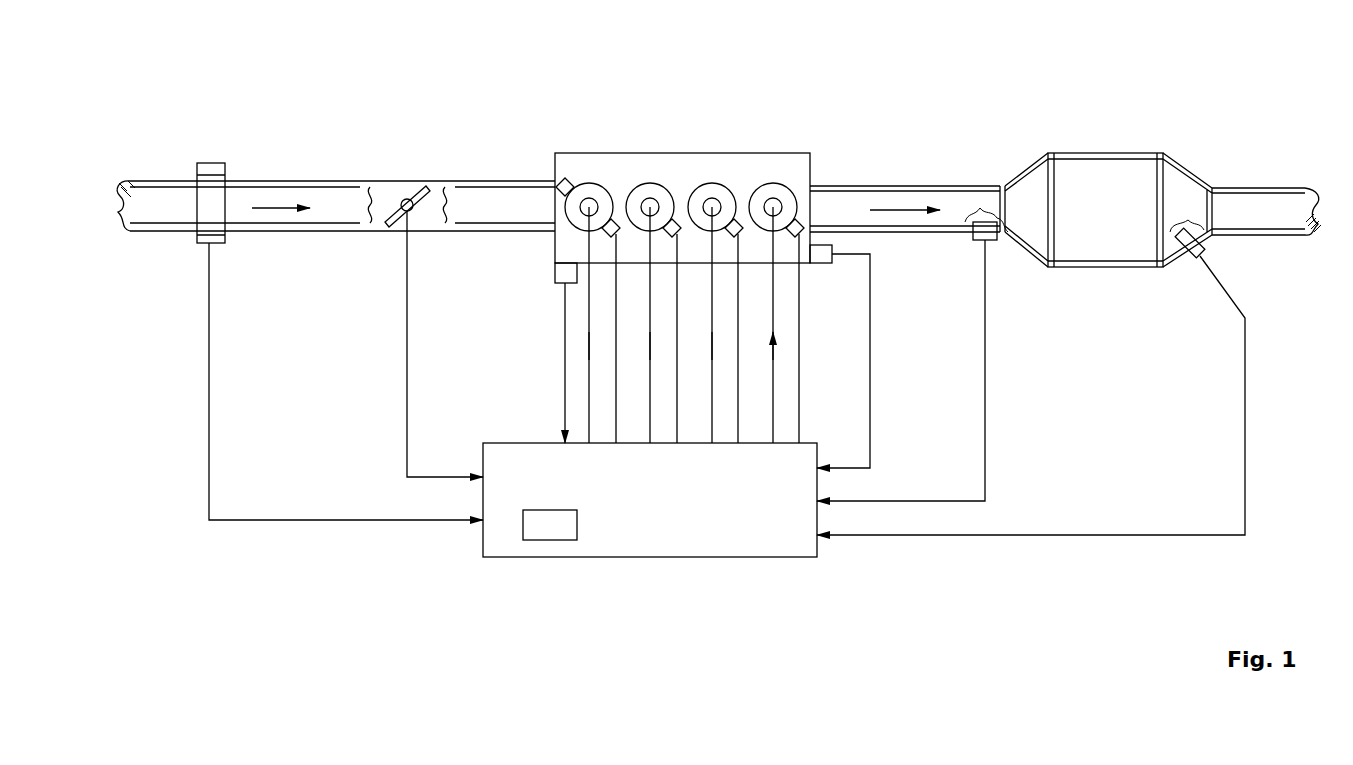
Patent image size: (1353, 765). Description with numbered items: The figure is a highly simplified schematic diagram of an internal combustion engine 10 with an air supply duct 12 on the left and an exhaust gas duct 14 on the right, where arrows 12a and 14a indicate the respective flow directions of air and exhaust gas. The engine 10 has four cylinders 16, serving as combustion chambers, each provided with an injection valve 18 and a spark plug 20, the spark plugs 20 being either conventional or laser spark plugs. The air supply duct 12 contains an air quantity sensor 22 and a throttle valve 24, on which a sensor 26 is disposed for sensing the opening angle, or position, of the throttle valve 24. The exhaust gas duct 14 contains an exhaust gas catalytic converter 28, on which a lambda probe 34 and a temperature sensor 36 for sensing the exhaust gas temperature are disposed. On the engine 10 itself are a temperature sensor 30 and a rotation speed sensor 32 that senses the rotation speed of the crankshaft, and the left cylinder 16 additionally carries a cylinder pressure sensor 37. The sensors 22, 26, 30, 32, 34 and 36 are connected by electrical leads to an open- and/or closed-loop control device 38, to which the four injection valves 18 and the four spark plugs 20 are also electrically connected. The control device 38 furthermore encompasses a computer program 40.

The internal combustion engine 10 is at (555, 97).
The air supply duct 12 is at (345, 155).
The arrow 12a is at (286, 205).
The exhaust gas duct 14 is at (1028, 128).
The arrow 14a is at (904, 207).
The cylinder 16 is at (579, 183).
The injection valve 18 is at (608, 238).
The spark plug 20 is at (591, 199).
The air quantity sensor 22 is at (211, 163).
The throttle valve 24 is at (428, 187).
The sensor 26 is at (402, 200).
The exhaust gas catalytic converter 28 is at (1105, 153).
The temperature sensor 30 is at (555, 274).
The rotation speed sensor 32 is at (822, 263).
The lambda probe 34 is at (997, 240).
The temperature sensor 36 is at (1190, 256).
The cylinder pressure sensor 37 is at (562, 180).
The open- and/or closed-loop control device 38 is at (650, 557).
The computer program 40 is at (548, 540).